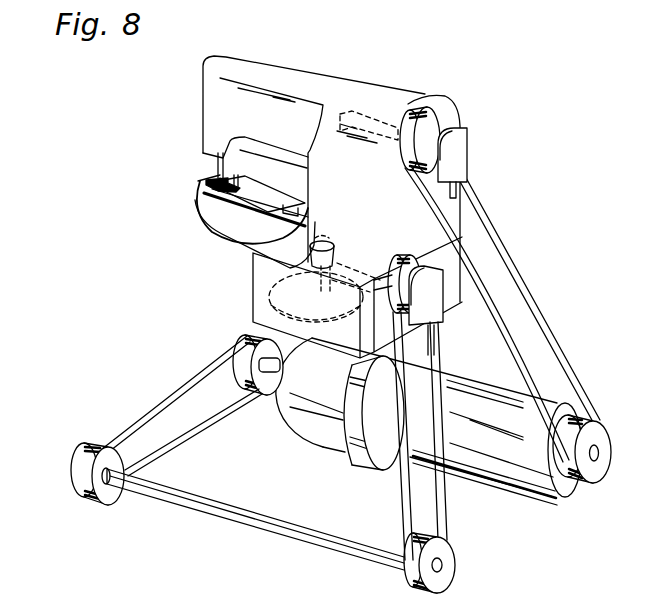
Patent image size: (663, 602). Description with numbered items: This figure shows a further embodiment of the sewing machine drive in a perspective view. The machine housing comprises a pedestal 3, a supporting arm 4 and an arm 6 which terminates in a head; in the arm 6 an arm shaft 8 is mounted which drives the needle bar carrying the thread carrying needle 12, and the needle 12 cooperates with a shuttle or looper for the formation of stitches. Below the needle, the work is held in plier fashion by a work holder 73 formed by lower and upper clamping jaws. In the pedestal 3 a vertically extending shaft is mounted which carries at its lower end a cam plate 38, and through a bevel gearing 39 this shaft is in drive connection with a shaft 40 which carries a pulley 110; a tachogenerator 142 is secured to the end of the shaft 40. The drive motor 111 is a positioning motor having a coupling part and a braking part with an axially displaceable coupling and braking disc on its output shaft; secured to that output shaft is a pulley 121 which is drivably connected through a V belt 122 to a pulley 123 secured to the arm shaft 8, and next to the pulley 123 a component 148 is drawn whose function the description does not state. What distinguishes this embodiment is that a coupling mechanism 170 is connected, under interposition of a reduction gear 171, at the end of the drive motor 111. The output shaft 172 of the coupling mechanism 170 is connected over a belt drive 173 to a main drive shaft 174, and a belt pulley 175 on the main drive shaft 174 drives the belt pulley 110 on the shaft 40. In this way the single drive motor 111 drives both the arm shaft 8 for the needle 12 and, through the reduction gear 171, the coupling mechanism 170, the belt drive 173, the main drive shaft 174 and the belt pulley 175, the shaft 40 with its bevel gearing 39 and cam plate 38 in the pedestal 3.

The arm 6 is at (339, 86).
The arm shaft 8 is at (362, 118).
The thread carrying needle 12 is at (217, 172).
The work holder 73 is at (237, 209).
The supporting arm 4 is at (251, 237).
The bevel gearing 39 is at (348, 255).
The shaft 40 is at (362, 268).
The cam plate 38 is at (270, 311).
The pedestal 3 is at (337, 343).
The pulley 110 is at (421, 258).
The pulley 123 is at (412, 98).
The coupling roller 148 is at (461, 160).
The tachogenerator 142 is at (441, 305).
The V belt 122 is at (559, 363).
The pulley 121 is at (599, 465).
The drive motor 111 is at (542, 493).
The belt drive 173 is at (140, 418).
The output shaft 172 is at (268, 374).
The main drive shaft 174 is at (212, 502).
The coupling mechanism 170 is at (302, 431).
The reduction gear 171 is at (373, 448).
The belt pulley 175 is at (442, 491).